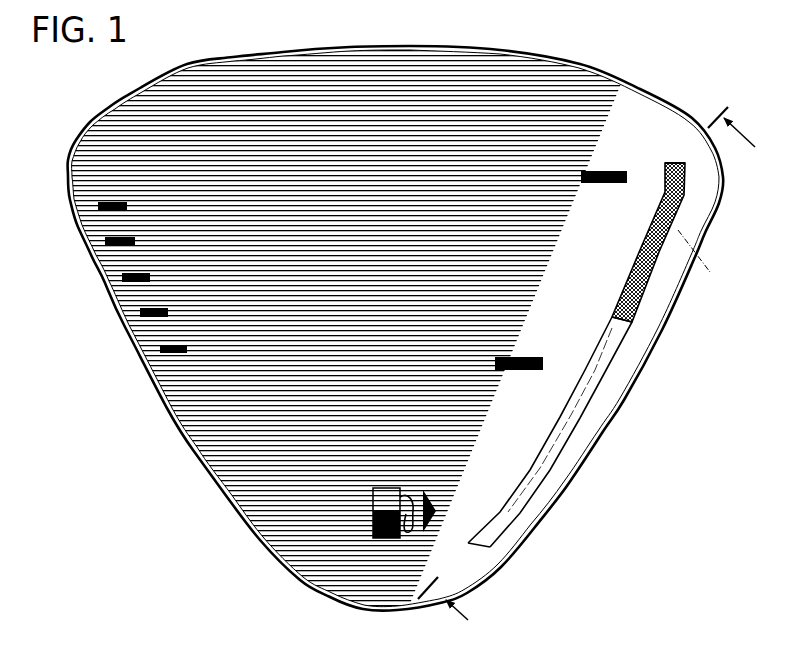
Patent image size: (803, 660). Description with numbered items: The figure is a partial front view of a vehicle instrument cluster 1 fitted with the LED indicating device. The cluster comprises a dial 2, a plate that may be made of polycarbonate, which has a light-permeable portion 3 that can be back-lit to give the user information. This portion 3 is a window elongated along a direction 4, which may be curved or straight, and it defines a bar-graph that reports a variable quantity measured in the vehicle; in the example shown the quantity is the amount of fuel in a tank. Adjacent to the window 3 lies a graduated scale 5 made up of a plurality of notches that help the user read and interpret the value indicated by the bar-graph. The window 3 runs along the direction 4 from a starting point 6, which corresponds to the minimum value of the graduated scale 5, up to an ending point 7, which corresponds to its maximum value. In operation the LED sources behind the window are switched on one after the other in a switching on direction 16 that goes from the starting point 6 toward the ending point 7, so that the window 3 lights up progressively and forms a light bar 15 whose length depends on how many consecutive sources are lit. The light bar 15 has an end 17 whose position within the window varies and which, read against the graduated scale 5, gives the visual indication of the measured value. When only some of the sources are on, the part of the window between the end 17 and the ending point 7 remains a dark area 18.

The vehicle instrument cluster 1 is at (704, 60).
The dial 2 is at (330, 76).
The window 3 is at (565, 354).
The direction 4 is at (712, 275).
The graduated scale 5 is at (532, 355).
The starting point 6 is at (483, 541).
The ending point 7 is at (677, 162).
The light bar 15 is at (533, 477).
The switching on direction 16 is at (500, 528).
The end of the light bar 17 is at (622, 300).
The dark area 18 is at (637, 267).